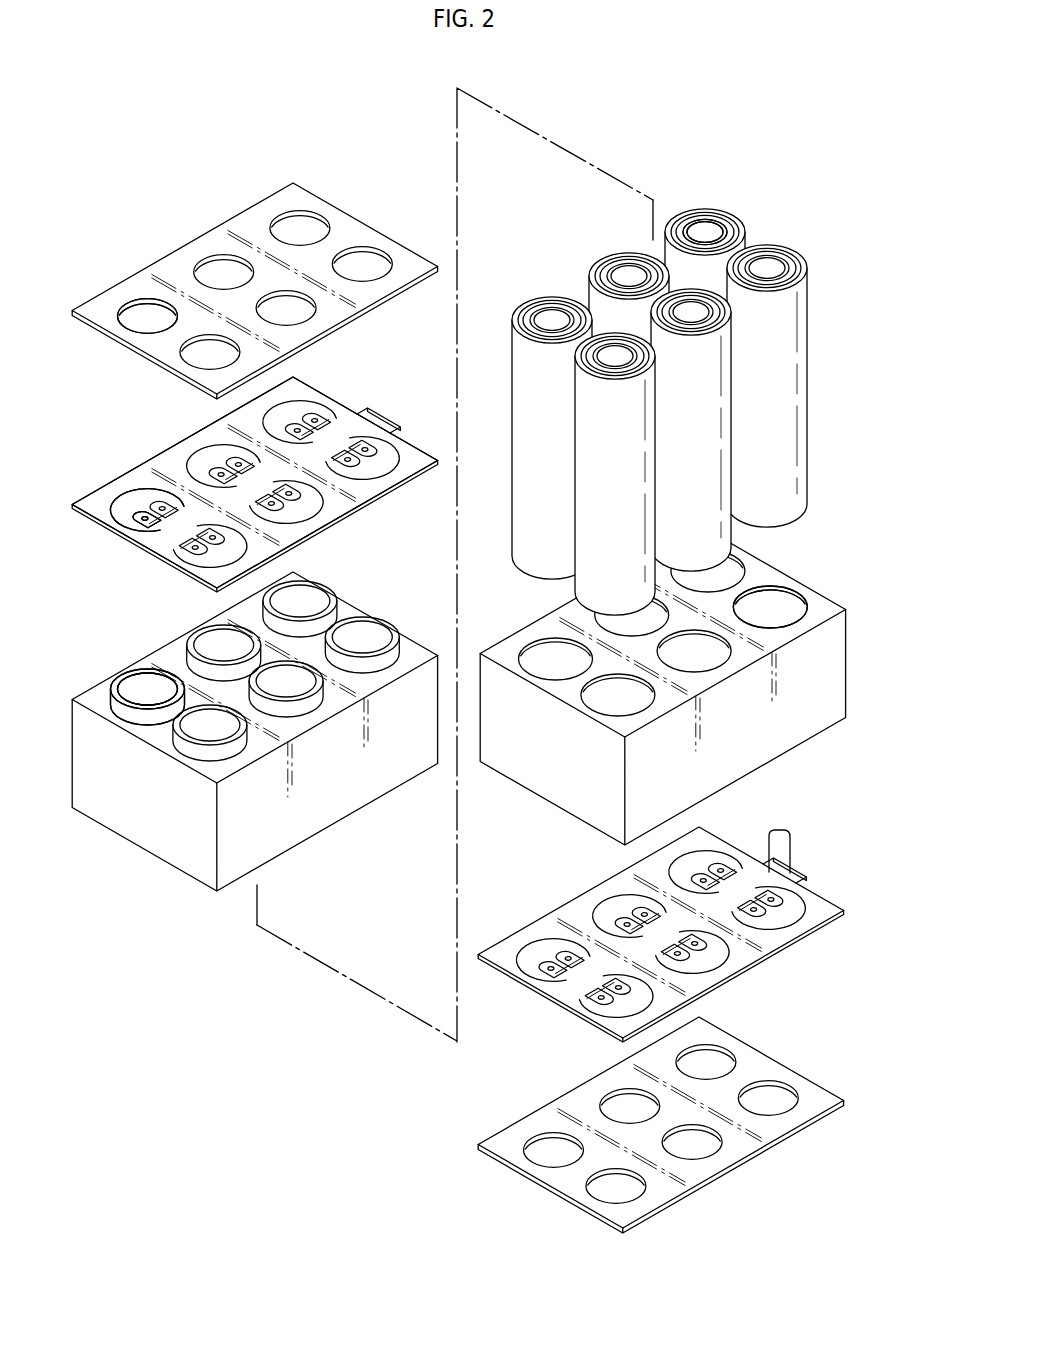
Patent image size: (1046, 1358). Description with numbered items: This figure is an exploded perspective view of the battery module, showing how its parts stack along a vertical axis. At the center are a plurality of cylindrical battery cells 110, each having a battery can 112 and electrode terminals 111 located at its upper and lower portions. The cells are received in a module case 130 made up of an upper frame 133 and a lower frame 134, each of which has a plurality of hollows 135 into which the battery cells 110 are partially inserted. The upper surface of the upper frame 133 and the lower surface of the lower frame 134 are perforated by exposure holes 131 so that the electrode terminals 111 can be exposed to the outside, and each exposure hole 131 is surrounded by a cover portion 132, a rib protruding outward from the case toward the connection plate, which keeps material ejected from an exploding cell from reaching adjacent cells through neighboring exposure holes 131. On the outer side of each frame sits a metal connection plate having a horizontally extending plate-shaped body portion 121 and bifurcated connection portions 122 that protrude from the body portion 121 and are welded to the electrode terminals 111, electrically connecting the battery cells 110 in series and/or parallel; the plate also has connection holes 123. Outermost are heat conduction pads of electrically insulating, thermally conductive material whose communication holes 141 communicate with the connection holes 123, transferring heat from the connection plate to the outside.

The battery cell 110 is at (695, 394).
The electrode terminal 111 is at (710, 232).
The battery can 112 is at (750, 242).
The body portion 121 is at (128, 480).
The connection portion 122 is at (125, 517).
The connection hole 123 is at (134, 498).
The module case 130 is at (452, 708).
The exposure hole 131 is at (148, 695).
The cover portion 132 is at (127, 682).
The upper frame 133 is at (363, 790).
The lower frame 134 is at (523, 780).
The hollow 135 is at (787, 597).
The communication hole 141 is at (137, 303).